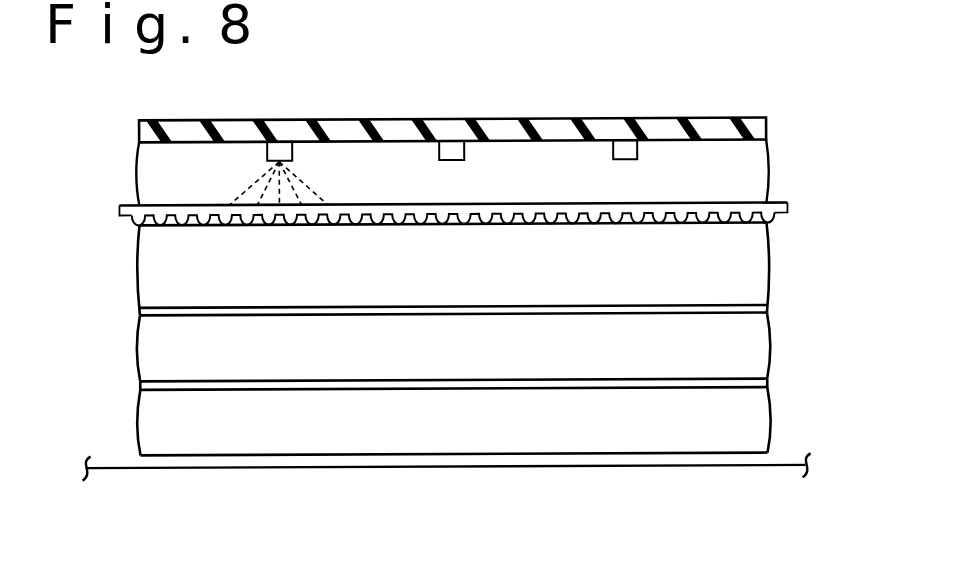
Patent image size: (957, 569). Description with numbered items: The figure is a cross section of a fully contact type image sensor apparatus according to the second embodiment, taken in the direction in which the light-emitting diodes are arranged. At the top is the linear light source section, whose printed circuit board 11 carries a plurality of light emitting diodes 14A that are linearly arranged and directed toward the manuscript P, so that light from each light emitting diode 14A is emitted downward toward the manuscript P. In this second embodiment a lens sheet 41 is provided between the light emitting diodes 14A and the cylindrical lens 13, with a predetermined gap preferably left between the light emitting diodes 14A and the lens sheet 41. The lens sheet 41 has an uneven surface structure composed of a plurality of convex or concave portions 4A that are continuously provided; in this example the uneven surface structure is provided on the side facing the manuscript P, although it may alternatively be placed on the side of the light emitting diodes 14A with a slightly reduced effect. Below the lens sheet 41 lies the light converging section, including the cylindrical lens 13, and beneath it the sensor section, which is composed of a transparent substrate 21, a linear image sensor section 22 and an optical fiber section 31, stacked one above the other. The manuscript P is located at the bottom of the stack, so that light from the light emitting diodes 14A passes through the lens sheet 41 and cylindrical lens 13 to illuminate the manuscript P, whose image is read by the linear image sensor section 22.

The printed circuit board 11 is at (760, 128).
The light emitting diodes 14A is at (474, 141).
The lens sheet 41 is at (782, 206).
The convex or concave portions 4A is at (138, 224).
The cylindrical lens 13 is at (757, 264).
The transparent substrate 21 is at (758, 345).
The linear image sensor section 22 is at (760, 387).
The optical fiber section 31 is at (757, 427).
The manuscript P is at (644, 467).